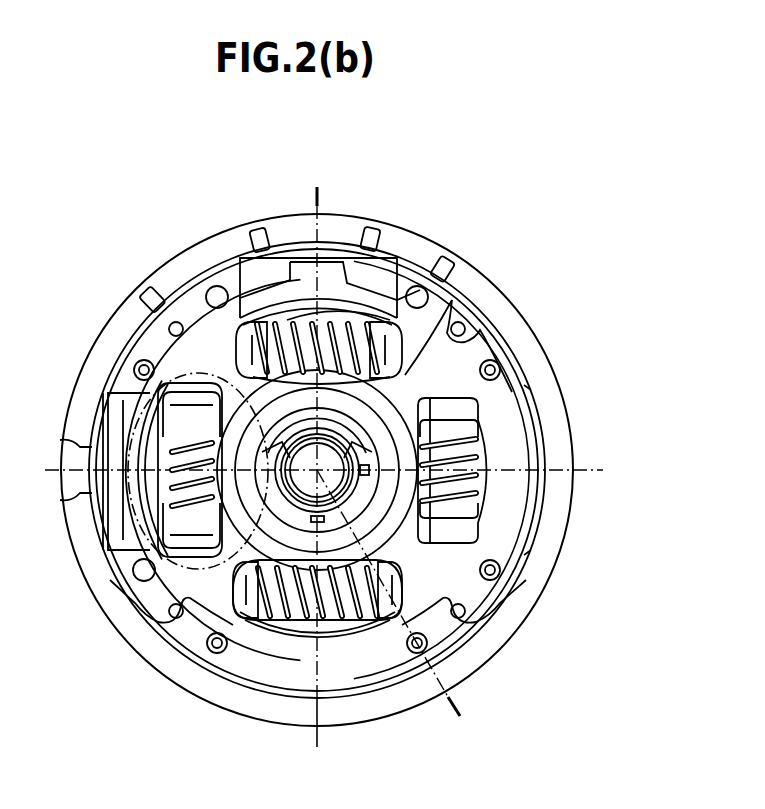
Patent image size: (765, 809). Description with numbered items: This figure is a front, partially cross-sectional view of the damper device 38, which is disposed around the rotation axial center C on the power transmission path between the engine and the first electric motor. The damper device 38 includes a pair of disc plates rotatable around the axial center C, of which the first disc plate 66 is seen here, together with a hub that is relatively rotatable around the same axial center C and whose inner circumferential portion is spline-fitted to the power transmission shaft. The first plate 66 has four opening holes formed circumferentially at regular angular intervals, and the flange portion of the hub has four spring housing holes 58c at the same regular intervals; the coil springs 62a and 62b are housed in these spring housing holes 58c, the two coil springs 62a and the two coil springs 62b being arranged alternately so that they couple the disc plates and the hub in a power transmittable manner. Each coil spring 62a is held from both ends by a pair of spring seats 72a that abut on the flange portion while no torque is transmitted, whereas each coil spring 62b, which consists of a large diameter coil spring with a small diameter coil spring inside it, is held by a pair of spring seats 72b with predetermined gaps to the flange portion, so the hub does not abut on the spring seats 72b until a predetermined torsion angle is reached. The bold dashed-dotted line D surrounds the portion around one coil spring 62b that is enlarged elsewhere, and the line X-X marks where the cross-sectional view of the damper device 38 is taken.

The damper device 38 is at (482, 187).
The first disc plate 66 is at (370, 662).
The spring housing hole 58c is at (282, 318).
The coil spring 62a is at (330, 332).
The coil spring 62b is at (170, 516).
The spring seat 72a is at (253, 338).
The spring seat 72b is at (162, 423).
The rotation axial center C is at (316, 472).
The bold dashed-dotted line D is at (112, 622).
The line X- X is at (324, 457).